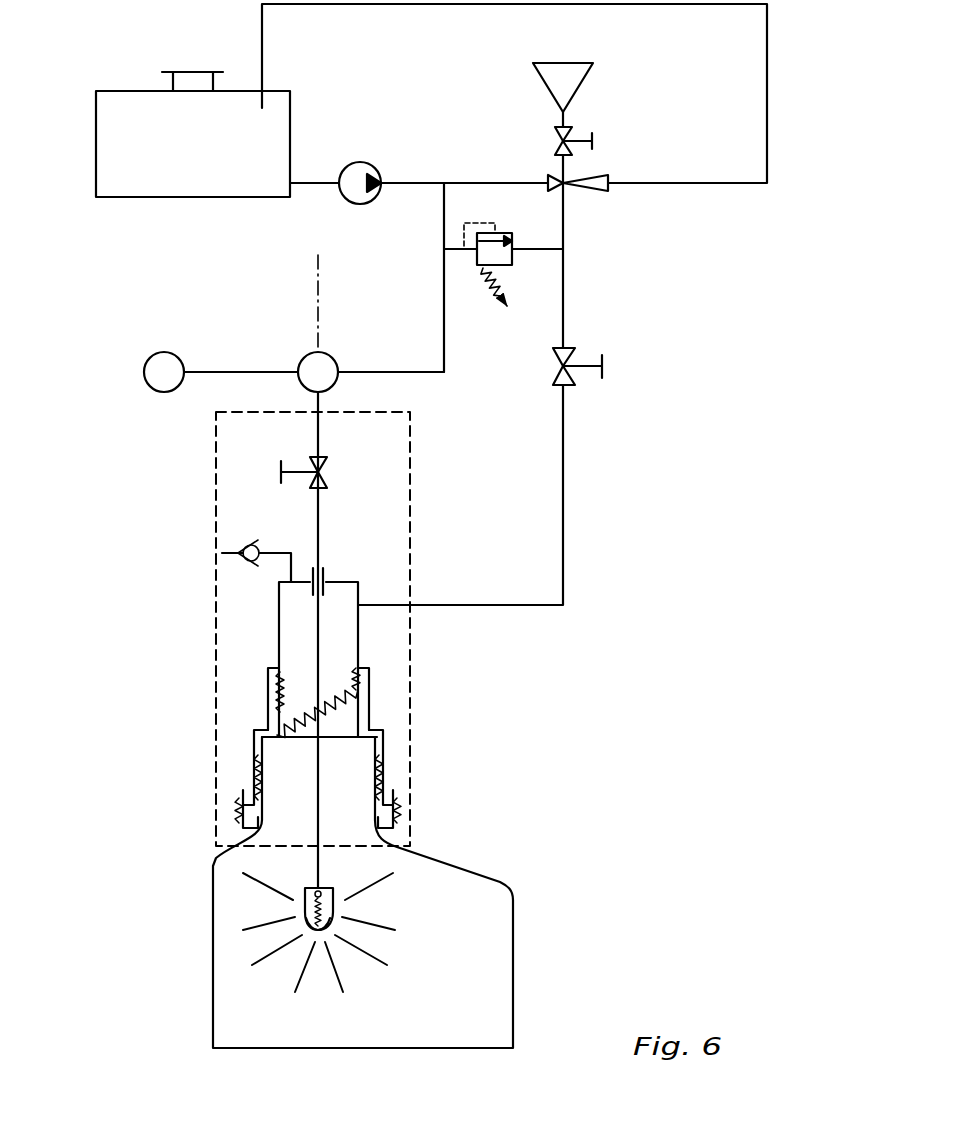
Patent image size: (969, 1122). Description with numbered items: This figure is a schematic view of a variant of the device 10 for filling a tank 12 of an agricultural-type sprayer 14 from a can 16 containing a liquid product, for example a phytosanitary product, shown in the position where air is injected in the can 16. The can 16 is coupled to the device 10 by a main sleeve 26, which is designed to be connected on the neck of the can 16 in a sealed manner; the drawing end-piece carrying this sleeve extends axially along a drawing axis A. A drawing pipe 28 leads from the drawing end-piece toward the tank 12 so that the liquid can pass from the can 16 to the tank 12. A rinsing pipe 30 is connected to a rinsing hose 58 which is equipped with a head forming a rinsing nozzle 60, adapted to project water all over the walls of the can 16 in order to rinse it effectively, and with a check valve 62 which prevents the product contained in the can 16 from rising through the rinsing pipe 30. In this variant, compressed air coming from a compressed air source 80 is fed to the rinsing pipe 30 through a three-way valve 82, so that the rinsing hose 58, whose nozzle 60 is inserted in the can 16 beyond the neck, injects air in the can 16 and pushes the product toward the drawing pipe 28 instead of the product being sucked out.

The device 10 is at (714, 434).
The tank 12 is at (208, 58).
The agricultural-type sprayer 14 is at (110, 68).
The can 16 is at (518, 864).
The main sleeve 26 is at (236, 740).
The drawing pipe 28 is at (582, 532).
The rinsing pipe 30 is at (371, 357).
The rinsing hose 58 is at (288, 909).
The rinsing nozzle 60 is at (310, 925).
The check valve 62 is at (305, 888).
The compressed air source 80 is at (150, 357).
The three-way valve 82 is at (338, 378).
The drawing axis A is at (318, 268).